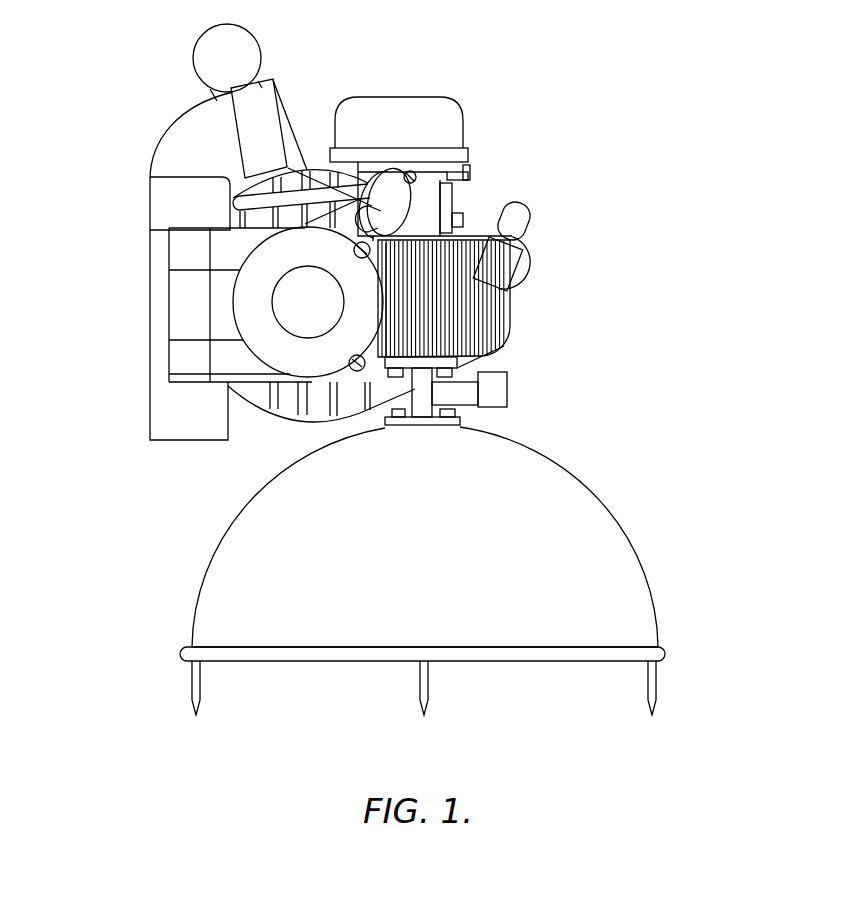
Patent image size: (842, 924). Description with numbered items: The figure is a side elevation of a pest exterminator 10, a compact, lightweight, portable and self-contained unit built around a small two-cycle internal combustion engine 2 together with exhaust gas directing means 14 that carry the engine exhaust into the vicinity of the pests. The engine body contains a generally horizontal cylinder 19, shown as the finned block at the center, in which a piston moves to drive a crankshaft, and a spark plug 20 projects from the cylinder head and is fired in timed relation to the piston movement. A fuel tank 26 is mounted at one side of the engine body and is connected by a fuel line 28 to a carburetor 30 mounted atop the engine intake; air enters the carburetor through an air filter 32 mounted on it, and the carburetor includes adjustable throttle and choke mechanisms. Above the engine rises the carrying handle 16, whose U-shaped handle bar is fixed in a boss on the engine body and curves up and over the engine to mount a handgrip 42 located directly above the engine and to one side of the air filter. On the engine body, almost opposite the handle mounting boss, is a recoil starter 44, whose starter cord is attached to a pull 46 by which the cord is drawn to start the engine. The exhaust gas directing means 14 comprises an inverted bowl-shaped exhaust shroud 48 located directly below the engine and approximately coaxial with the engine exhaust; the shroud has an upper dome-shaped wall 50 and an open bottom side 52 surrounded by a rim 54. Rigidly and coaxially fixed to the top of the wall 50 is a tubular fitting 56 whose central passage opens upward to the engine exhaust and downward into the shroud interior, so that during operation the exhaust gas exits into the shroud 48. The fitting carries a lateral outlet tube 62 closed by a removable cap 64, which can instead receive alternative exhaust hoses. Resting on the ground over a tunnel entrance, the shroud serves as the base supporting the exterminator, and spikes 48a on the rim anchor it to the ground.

The pest exterminator 10 is at (565, 93).
The engine 2 is at (623, 350).
The exhaust gas directing means 14 is at (228, 493).
The handle 16 is at (219, 54).
The cylinder 19 is at (498, 315).
The spark plug 20 is at (498, 262).
The fuel tank 26 is at (158, 207).
The fuel line 28 is at (323, 192).
The carburetor 30 is at (425, 212).
The air filter 32 is at (447, 107).
The handgrip 42 is at (204, 67).
The recoil starter 44 is at (303, 297).
The pull 46 is at (395, 197).
The exhaust shroud 48 is at (248, 548).
The spikes 48a is at (198, 696).
The dome-shaped wall 50 is at (600, 523).
The open bottom side 52 is at (607, 665).
The rim 54 is at (670, 651).
The tubular fitting 56 is at (462, 423).
The outlet tube 62 is at (458, 398).
The cap 64 is at (502, 388).